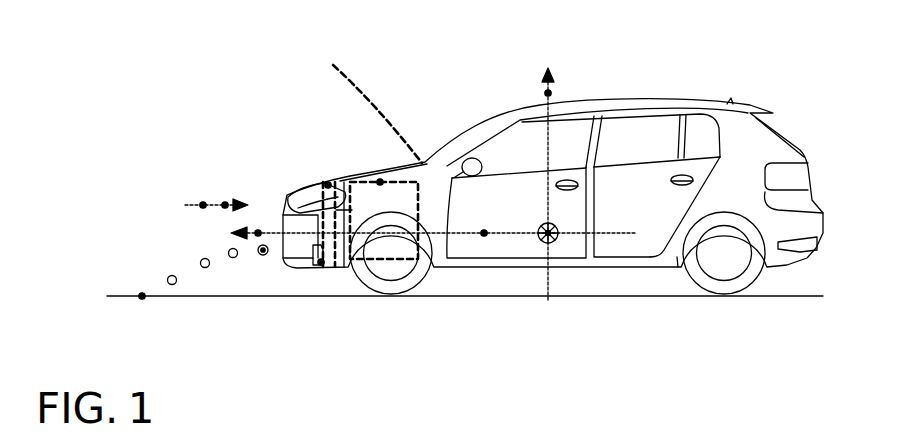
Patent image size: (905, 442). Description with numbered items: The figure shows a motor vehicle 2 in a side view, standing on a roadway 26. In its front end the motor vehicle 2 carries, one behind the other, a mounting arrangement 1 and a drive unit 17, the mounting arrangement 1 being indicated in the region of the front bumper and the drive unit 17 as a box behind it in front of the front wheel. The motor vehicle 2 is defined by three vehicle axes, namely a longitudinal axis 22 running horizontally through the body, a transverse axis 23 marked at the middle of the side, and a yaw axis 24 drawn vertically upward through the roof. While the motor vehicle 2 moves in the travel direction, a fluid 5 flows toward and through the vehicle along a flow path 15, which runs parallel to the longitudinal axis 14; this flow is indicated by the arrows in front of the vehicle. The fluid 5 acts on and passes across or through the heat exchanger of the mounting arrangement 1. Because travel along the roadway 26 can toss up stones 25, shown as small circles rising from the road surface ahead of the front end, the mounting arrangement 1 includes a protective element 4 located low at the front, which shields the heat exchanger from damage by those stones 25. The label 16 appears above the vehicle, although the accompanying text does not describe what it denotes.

The mounting arrangement 1 is at (328, 183).
The motor vehicle 2 is at (732, 88).
The protective element 4 is at (319, 266).
The fluid 5 is at (203, 203).
The longitudinal axis 14 is at (257, 236).
The flow path 15 is at (227, 203).
The vehicle surroundings 16 is at (508, 44).
The drive unit 17 is at (380, 180).
The longitudinal axis 22 is at (483, 236).
The transverse axis 23 is at (545, 243).
The yaw axis 24 is at (552, 92).
The stones 25 is at (263, 256).
The roadway 26 is at (142, 299).